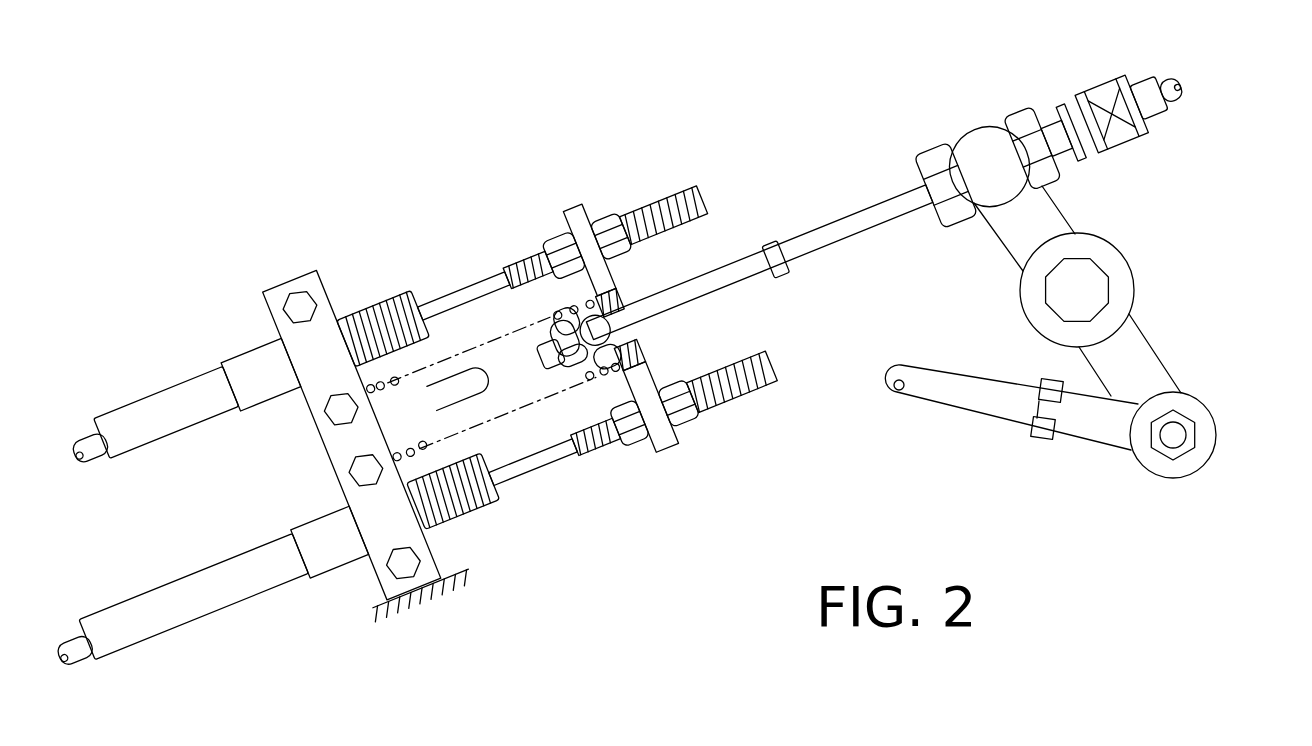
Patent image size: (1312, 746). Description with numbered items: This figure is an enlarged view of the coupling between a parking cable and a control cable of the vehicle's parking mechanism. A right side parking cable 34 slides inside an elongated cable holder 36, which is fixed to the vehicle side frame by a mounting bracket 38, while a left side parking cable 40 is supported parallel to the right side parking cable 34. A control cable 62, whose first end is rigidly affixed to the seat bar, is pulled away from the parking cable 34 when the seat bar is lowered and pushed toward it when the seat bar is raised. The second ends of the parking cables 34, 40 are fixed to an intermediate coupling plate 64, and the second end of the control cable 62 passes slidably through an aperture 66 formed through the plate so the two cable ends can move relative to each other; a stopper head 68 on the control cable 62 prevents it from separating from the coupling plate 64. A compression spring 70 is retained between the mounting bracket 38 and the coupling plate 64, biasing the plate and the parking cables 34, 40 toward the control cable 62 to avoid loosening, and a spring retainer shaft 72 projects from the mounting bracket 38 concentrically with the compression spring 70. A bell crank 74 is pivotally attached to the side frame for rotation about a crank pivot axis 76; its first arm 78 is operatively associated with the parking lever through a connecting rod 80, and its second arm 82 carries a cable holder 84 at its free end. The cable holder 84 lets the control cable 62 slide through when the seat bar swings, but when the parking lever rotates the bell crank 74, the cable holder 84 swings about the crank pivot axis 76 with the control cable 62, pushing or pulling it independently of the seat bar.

The right side parking cable 34 is at (553, 454).
The elongated cable holder 36 is at (197, 600).
The mounting bracket 38 is at (372, 560).
The left side parking cable 40 is at (470, 286).
The control cable 62 is at (823, 234).
The intermediate coupling plate 64 is at (570, 222).
The aperture 66 is at (627, 318).
The stopper head 68 is at (598, 450).
The compression spring 70 is at (378, 318).
The spring retainer shaft 72 is at (480, 408).
The bell crank 74 is at (1142, 228).
The crank pivot axis 76 is at (1088, 291).
The first arm 78 is at (1140, 366).
The connecting rod 80 is at (962, 392).
The second arm 82 is at (1000, 238).
The cable holder 84 is at (987, 147).